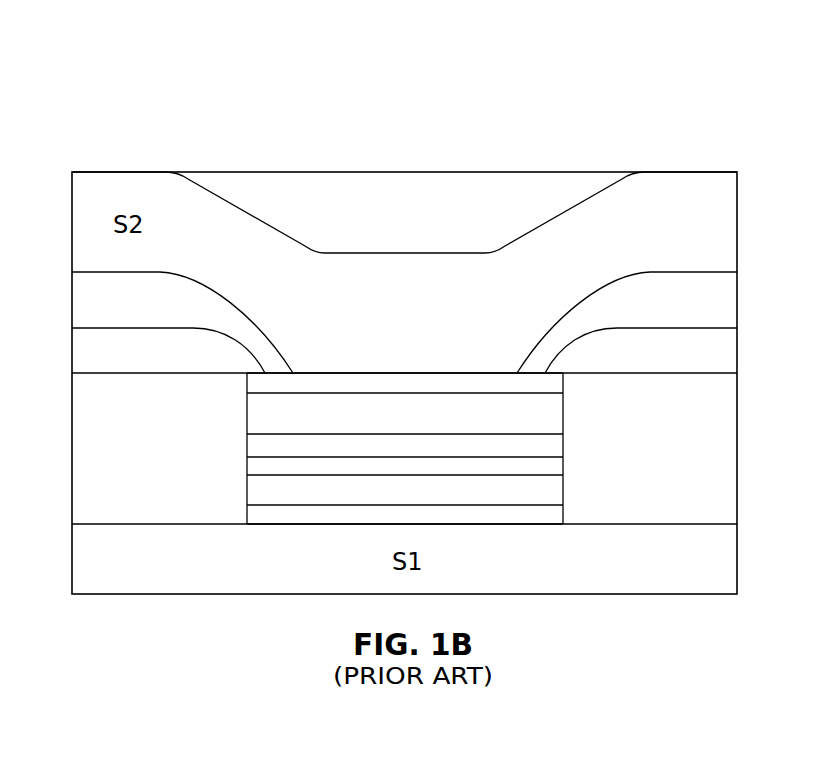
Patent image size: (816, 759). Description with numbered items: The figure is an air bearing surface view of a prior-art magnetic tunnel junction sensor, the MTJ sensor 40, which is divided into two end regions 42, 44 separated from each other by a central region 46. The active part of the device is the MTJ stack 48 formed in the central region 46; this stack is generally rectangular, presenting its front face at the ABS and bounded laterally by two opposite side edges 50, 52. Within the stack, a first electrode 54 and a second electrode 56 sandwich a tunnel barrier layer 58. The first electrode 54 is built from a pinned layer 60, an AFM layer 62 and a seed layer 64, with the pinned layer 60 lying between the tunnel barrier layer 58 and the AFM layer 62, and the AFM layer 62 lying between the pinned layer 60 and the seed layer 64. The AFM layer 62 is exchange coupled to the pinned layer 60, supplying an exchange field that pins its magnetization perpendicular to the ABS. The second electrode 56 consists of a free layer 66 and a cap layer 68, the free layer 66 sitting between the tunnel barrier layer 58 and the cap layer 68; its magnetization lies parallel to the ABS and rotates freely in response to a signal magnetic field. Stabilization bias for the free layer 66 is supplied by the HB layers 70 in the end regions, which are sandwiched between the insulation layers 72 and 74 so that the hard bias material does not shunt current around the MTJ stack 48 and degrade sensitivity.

The MTJ sensor 40 is at (569, 72).
The end region 42 is at (72, 156).
The end region 44 is at (735, 156).
The central region 46 is at (562, 154).
The MTJ stack 48 is at (178, 375).
The side edge 50 is at (245, 445).
The side edge 52 is at (565, 420).
The first electrode 54 is at (245, 455).
The second electrode 56 is at (245, 375).
The tunnel barrier layer 58 is at (555, 445).
The pinned layer 60 is at (555, 467).
The AFM layer 62 is at (555, 488).
The seed layer 64 is at (517, 520).
The free layer 66 is at (553, 406).
The cap layer 68 is at (471, 384).
The HB layer 70 is at (170, 362).
The insulation layer 72 is at (197, 317).
The insulation layer 74 is at (103, 503).